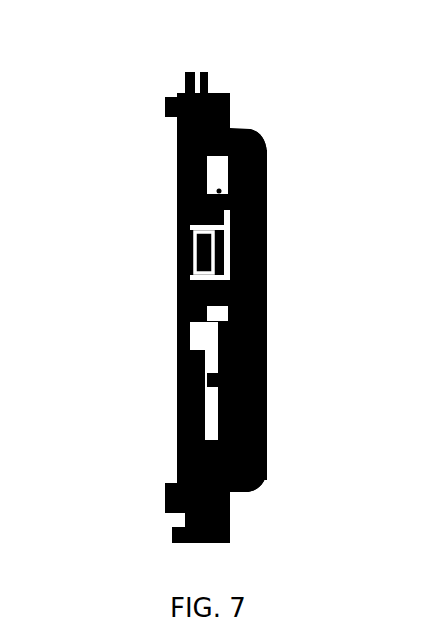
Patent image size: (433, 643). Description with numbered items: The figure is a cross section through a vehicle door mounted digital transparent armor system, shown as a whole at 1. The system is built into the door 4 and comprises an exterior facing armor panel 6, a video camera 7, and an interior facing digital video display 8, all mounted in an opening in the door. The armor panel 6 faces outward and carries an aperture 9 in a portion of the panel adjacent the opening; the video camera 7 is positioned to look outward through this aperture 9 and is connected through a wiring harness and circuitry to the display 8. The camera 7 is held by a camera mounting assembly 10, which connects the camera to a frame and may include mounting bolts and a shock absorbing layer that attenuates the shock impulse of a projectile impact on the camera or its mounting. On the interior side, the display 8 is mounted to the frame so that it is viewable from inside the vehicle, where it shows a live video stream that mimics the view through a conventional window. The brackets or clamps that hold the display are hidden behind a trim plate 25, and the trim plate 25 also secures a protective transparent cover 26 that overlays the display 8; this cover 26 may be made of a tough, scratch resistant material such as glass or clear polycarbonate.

The electronic device assembly 1 is at (312, 471).
The door 4 is at (217, 93).
The armor panel 6 is at (178, 378).
The video camera 7 is at (178, 253).
The digital video display 8 is at (268, 274).
The aperture 9 is at (148, 238).
The camera mounting assembly 10 is at (178, 177).
The trim plate 25 is at (270, 152).
The protective transparent cover 26 is at (268, 342).